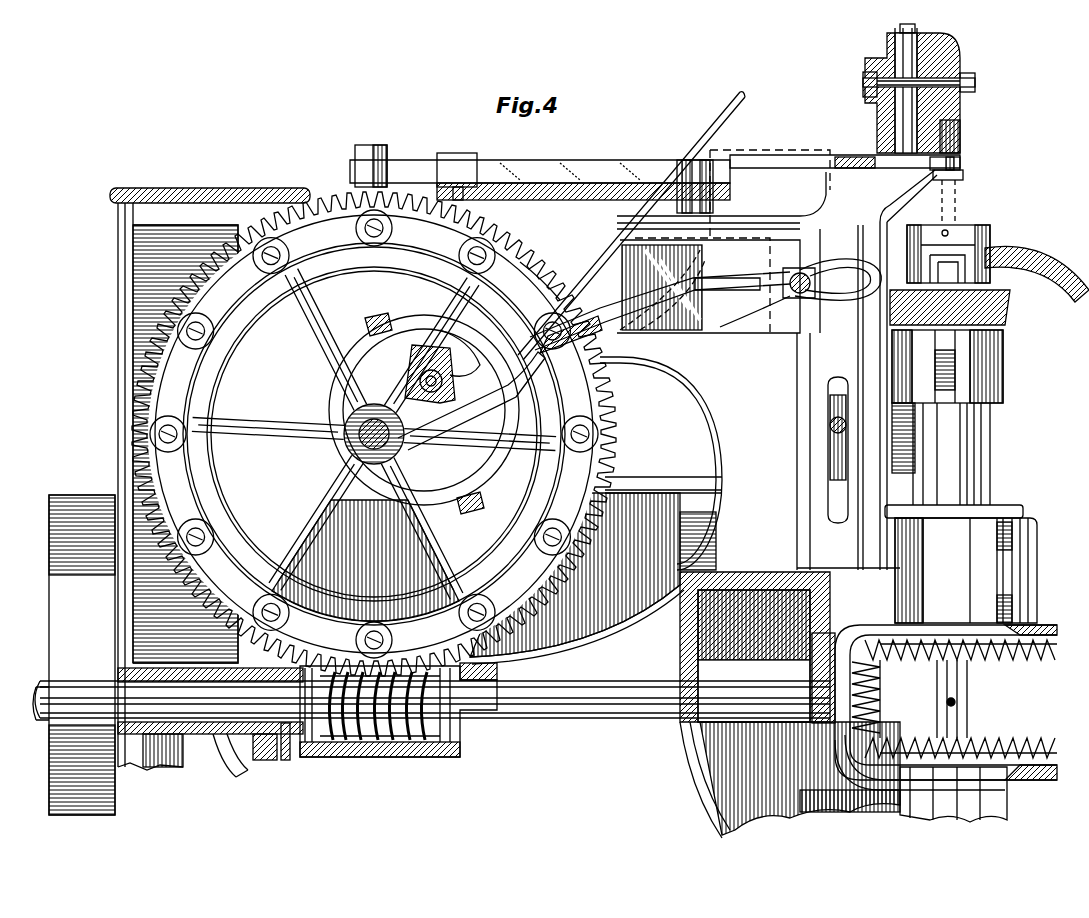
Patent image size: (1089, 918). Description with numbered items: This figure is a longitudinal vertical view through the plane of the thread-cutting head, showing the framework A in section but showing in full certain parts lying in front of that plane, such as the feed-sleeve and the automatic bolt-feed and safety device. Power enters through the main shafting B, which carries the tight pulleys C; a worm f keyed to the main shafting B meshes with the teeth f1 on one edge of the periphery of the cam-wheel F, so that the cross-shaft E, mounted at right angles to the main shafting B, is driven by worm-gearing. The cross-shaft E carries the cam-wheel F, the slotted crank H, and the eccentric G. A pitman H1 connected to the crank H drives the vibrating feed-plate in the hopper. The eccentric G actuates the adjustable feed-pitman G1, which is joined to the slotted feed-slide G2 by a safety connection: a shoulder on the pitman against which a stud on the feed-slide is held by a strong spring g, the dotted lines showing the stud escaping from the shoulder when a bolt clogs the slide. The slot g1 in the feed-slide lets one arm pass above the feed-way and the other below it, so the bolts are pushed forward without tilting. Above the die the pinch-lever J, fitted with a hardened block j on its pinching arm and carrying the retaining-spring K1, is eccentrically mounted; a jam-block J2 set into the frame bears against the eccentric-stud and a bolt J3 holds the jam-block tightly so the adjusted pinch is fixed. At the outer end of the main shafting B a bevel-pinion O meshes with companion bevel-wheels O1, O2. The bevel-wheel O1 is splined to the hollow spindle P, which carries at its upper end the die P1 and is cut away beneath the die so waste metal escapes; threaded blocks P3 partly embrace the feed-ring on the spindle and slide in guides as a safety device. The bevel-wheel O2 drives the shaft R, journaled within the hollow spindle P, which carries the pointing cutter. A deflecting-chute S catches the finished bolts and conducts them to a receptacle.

The framework A is at (673, 484).
The main shafting B is at (604, 703).
The tight pulleys C is at (74, 655).
The cross-shaft E is at (358, 448).
The cam-wheel F is at (243, 322).
The worm f is at (320, 746).
The teeth f1 is at (543, 274).
The eccentric G is at (420, 334).
The feed-pitman G1 is at (658, 326).
The feed-slide G2 is at (800, 295).
The spring g is at (840, 287).
The slot g1 is at (860, 158).
The crank H is at (414, 408).
The pitman H1 is at (702, 148).
The pinch-lever J is at (548, 173).
The jam-block J2 is at (880, 108).
The bolt J3 is at (866, 80).
The hardened block j is at (958, 168).
The retaining-spring K1 is at (965, 172).
The bevel-pinion O is at (928, 723).
The bevel-wheel O1 is at (1022, 660).
The bevel-wheel O2 is at (1045, 700).
The hollow spindle P is at (985, 475).
The die P1 is at (985, 262).
The threaded blocks P3 is at (1003, 380).
The shaft R is at (958, 702).
The deflecting-chute S is at (1037, 277).